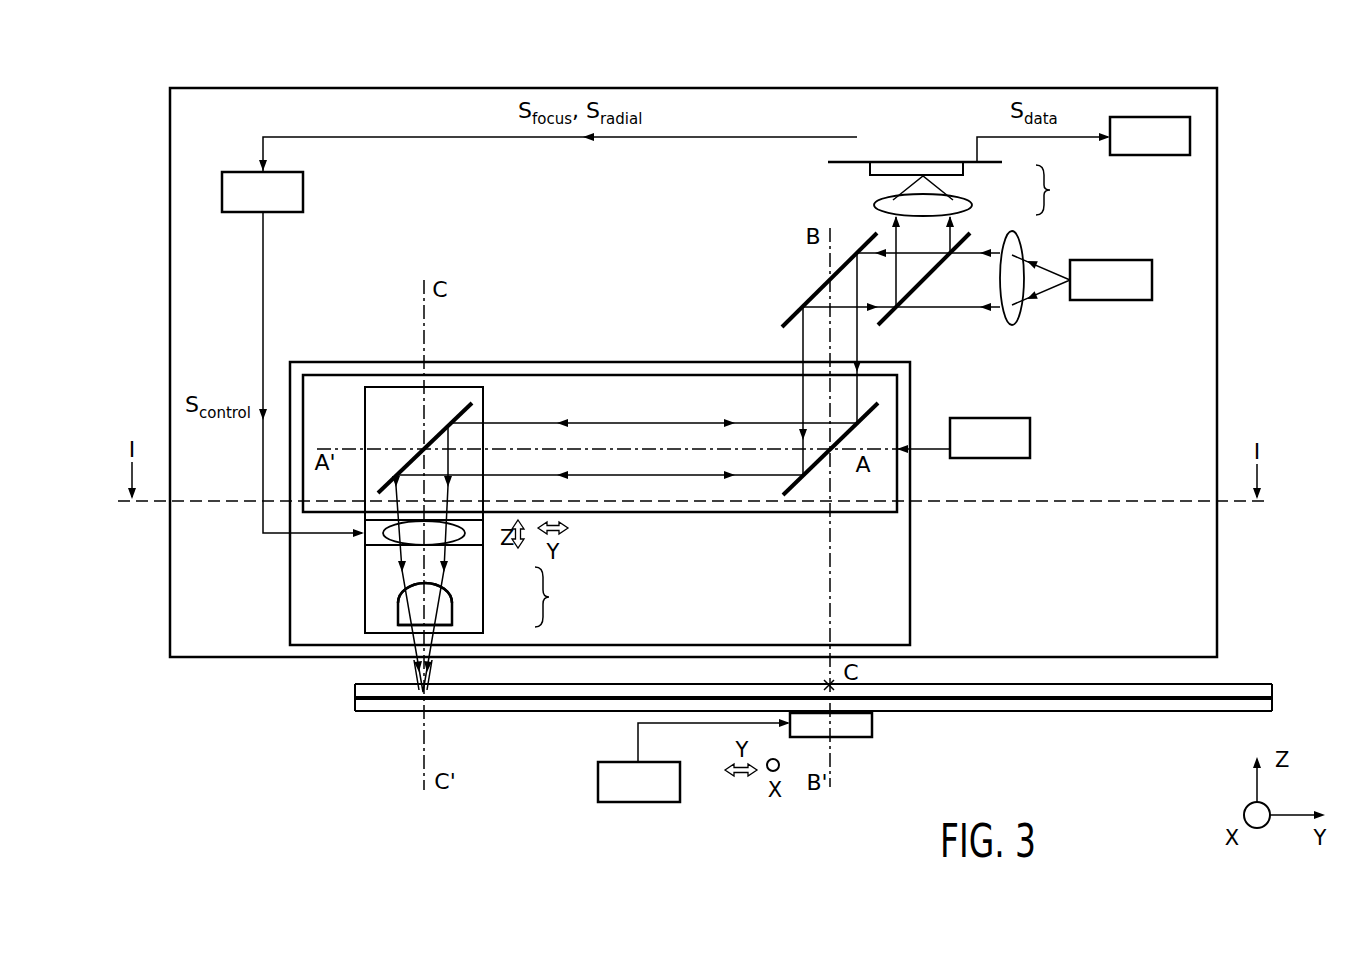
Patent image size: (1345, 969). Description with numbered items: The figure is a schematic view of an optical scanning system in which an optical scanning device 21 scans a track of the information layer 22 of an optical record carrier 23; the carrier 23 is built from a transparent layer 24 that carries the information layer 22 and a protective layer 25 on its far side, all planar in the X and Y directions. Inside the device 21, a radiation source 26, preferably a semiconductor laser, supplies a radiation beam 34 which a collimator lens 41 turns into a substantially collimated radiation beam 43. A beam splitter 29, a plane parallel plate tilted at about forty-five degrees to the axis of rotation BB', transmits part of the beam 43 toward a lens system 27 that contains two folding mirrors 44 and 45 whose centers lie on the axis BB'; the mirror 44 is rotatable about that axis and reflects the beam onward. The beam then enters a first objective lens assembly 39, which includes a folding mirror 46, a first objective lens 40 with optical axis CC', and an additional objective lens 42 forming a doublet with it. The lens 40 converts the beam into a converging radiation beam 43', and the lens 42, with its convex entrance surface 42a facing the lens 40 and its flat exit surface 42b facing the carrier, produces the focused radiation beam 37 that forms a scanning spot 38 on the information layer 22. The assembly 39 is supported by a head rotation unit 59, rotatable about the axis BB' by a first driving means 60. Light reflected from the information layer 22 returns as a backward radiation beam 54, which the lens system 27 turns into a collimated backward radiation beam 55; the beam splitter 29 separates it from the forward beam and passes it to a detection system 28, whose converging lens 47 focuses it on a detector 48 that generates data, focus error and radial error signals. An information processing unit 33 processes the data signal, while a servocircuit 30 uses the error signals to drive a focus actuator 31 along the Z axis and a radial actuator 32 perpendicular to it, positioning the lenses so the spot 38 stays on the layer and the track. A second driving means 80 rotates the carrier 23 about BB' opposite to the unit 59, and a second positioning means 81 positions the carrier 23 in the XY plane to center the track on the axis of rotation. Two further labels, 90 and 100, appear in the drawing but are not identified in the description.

The optical scanning device 21 is at (205, 659).
The information layer 22 is at (1150, 706).
The optical record carrier 23 is at (1250, 678).
The transparent layer 24 is at (1083, 699).
The protective layer 25 is at (1207, 710).
The radiation source 26 is at (1125, 301).
The lens system 27 is at (541, 237).
The detection system 28 is at (1052, 201).
The beam splitter 29 is at (882, 326).
The servocircuit 30 is at (303, 194).
The focus actuator 31 is at (363, 539).
The radial actuator 32 is at (365, 551).
The information processing unit 33 is at (1157, 156).
The radiation beam 34 is at (1045, 298).
The focused radiation beam 37 is at (414, 668).
The scanning spot 38 is at (554, 609).
The first objective lens assembly 39 is at (378, 387).
The first objective lens 40 is at (453, 613).
The collimator lens 41 is at (1010, 326).
The additional objective lens 42 is at (455, 541).
The convex entrance surface 42a is at (396, 600).
The flat exit surface 42b is at (400, 627).
The collimated radiation beam 43 is at (696, 357).
The converging radiation beam 43' is at (380, 589).
The folding mirror 44 is at (780, 324).
The folding mirror 45 is at (786, 498).
The folding mirror 46 is at (463, 400).
The converging lens 47 is at (972, 205).
The detector 48 is at (988, 166).
The backward radiation beam 54 is at (434, 660).
The collimated backward radiation beam 55 is at (885, 243).
The head rotation unit 59 is at (627, 362).
The first driving means 60 is at (1031, 440).
The second driving means 80 is at (860, 739).
The second positioning means 81 is at (618, 804).
The optical scanning apparatus 90 is at (262, 745).
The movable arm 100 is at (680, 513).